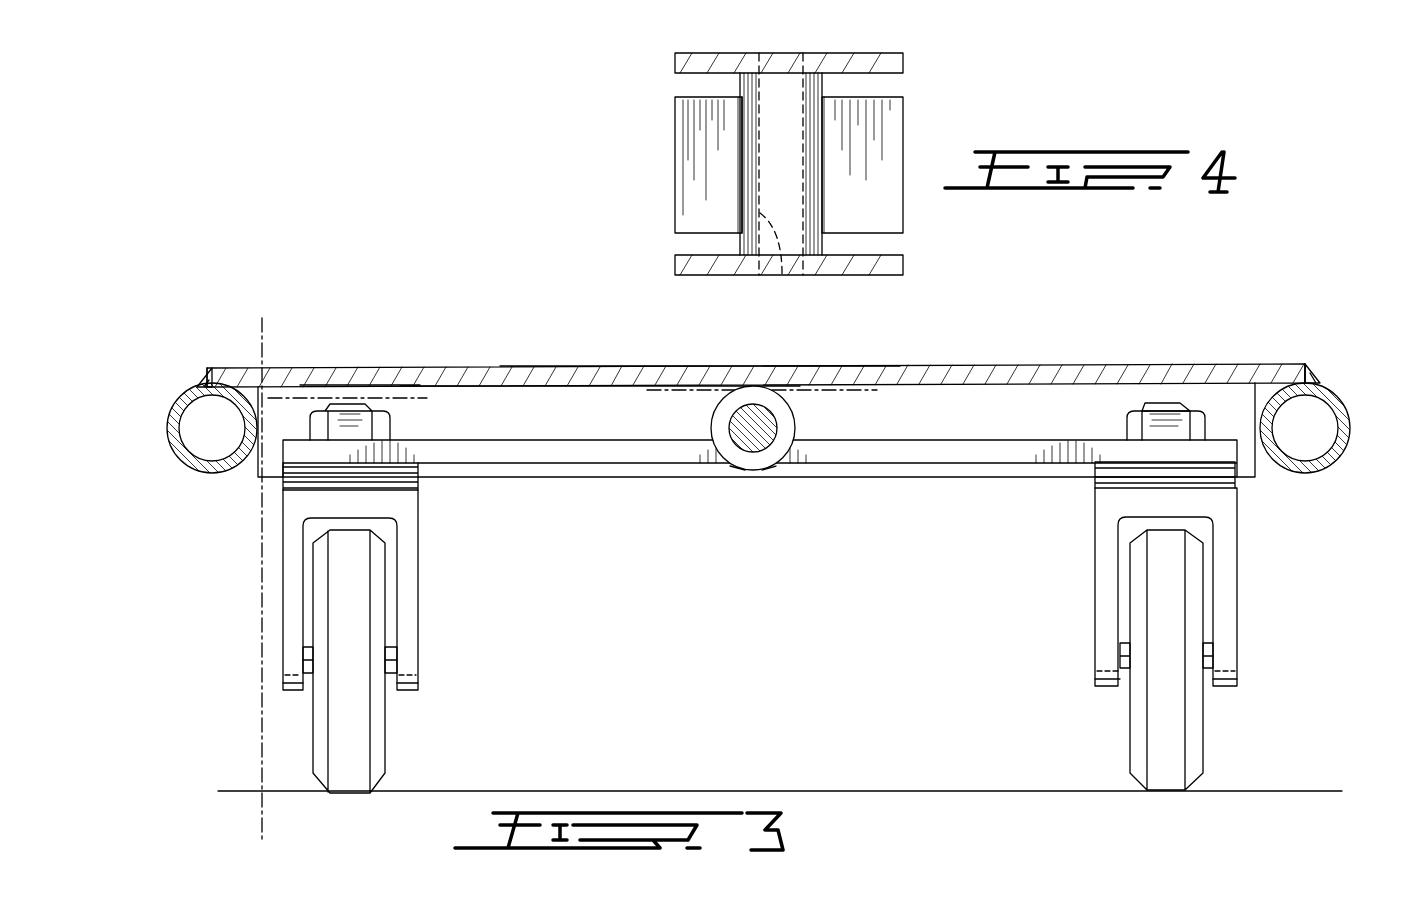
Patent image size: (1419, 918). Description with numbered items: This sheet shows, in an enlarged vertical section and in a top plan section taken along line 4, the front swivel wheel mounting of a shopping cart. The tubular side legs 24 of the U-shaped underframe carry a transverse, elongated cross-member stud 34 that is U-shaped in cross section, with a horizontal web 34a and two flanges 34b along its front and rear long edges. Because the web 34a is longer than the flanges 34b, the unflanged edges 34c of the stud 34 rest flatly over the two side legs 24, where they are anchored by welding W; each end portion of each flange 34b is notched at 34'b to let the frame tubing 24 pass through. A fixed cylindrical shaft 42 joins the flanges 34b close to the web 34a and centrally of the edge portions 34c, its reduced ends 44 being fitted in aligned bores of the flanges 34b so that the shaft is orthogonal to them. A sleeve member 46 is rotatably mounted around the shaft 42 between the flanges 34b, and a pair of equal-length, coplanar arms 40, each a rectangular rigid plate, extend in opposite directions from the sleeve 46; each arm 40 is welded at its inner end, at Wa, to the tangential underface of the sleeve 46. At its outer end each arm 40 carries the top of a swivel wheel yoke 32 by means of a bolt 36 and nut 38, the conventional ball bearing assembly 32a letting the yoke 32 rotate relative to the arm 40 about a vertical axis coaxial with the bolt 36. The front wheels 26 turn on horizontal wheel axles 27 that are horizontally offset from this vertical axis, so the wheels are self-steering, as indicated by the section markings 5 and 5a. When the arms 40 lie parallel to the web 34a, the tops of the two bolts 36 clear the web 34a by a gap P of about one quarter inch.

In FIG. 3, the side leg 24 is at (172, 452).
In FIG. 3, the front wheel 26 is at (320, 727).
In FIG. 3, the wheel axle 27 is at (307, 657).
In FIG. 3, the yoke 32 is at (293, 541).
In FIG. 3, the ball bearing assembly 32a is at (388, 480).
In FIG. 3, the cross-member stud 34 is at (756, 355).
In FIG. 3, the web 34a is at (700, 332).
In FIG. 3, the flange 34b is at (515, 400).
In FIG. 4, the flange 34b is at (688, 58).
In FIG. 3, the unflanged edge 34c is at (224, 377).
In FIG. 3, the notch 34'b is at (697, 469).
In FIG. 3, the bolt 36 is at (1170, 402).
In FIG. 3, the nut 38 is at (1128, 422).
In FIG. 3, the arm 40 is at (610, 450).
In FIG. 4, the arm 40 is at (690, 123).
In FIG. 3, the cylindrical shaft 42 is at (762, 420).
In FIG. 4, the cylindrical shaft 42 is at (778, 253).
In FIG. 4, the reduced end 44 is at (810, 63).
In FIG. 3, the sleeve member 46 is at (785, 438).
In FIG. 4, the sleeve member 46 is at (775, 178).
In FIG. 3, the welding W is at (208, 382).
In FIG. 3, the weld Wa is at (733, 467).
In FIG. 4, the weld Wa is at (823, 132).
In FIG. 3, the gap P is at (355, 392).
In FIG. 3, the section line 4- 4 is at (647, 390).
In FIG. 3, the section line 5 is at (299, 327).
In FIG. 3, the section line 5a is at (269, 398).